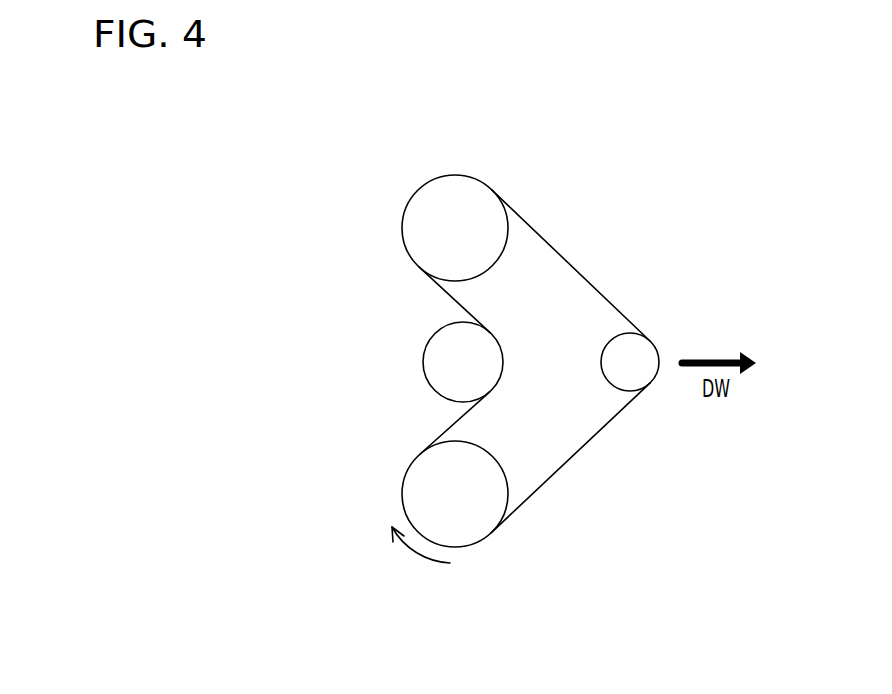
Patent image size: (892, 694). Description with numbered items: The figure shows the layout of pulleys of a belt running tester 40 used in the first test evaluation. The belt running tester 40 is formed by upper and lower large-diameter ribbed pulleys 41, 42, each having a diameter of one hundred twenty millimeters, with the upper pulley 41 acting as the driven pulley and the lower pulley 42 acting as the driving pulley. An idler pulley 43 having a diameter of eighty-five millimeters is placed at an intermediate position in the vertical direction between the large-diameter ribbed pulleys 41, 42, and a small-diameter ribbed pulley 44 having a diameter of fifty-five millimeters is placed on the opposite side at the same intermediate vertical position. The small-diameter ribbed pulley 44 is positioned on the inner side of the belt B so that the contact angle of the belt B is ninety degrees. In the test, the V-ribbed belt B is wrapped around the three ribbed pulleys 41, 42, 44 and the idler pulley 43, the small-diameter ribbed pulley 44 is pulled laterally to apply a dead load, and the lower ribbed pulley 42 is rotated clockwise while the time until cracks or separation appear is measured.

The belt running tester 40 is at (339, 145).
The upper large-diameter ribbed pulley 41 is at (408, 220).
The lower large-diameter ribbed pulley 42 is at (407, 492).
The idler pulley 43 is at (493, 368).
The small-diameter ribbed pulley 44 is at (645, 350).
The belt B is at (580, 273).